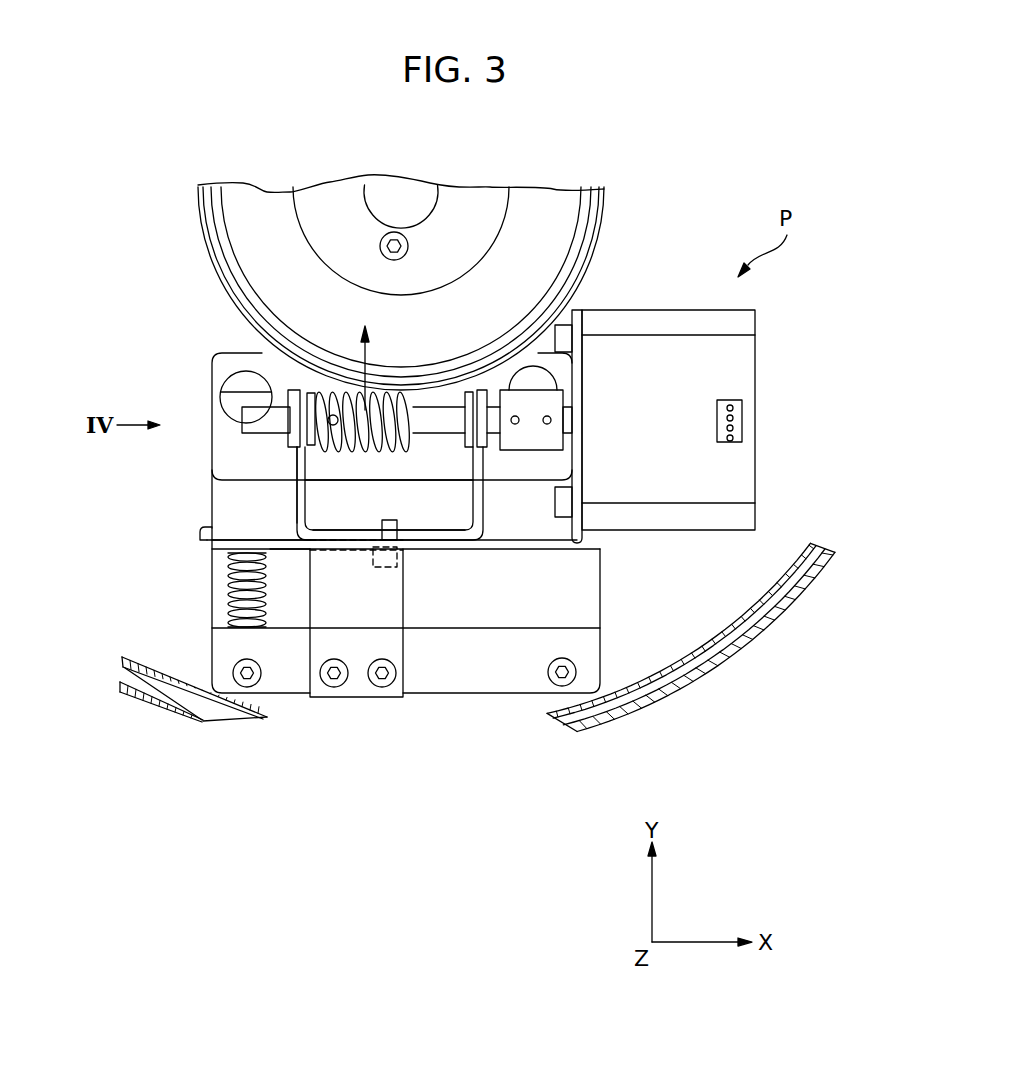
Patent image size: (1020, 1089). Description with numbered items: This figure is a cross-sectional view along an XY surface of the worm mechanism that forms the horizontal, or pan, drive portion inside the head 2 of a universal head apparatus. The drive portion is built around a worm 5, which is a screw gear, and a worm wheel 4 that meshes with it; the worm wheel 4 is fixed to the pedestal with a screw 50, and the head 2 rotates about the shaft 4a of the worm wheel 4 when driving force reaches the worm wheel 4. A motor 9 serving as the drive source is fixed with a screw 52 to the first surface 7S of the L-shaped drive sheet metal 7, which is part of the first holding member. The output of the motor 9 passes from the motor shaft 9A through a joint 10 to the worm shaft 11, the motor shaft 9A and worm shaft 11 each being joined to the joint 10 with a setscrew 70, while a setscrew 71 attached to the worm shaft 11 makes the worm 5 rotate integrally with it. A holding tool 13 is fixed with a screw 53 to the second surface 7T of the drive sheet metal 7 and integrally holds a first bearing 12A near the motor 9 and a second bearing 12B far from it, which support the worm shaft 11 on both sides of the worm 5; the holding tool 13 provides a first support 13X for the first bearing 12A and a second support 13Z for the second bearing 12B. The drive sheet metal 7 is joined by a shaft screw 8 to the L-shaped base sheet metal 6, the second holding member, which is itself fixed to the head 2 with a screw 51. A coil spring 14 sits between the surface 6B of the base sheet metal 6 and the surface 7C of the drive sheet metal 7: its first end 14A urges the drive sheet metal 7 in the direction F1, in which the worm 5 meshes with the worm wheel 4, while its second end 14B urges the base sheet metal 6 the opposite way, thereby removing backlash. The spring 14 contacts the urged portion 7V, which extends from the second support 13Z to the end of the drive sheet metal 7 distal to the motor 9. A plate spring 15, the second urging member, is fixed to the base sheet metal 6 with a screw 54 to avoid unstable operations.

The head 2 is at (678, 630).
The worm wheel 4 is at (560, 227).
The shaft 4a is at (410, 193).
The worm 5 is at (362, 352).
The base sheet metal 6 is at (468, 665).
The surface 6B is at (222, 627).
The drive sheet metal 7 is at (240, 538).
The surface 7C is at (222, 552).
The first surface 7S is at (578, 462).
The second surface 7T is at (283, 548).
The urged portion 7V is at (212, 530).
The shaft screw 8 is at (212, 397).
The motor 9 is at (724, 481).
The motor shaft 9A is at (572, 428).
The joint 10 is at (573, 443).
The worm shaft 11 is at (446, 418).
The first bearing 12A is at (483, 512).
The second bearing 12B is at (290, 441).
The holding tool 13 is at (450, 535).
The first support 13X is at (483, 470).
The second support 13Z is at (297, 490).
The spring 14 is at (228, 597).
The first end 14A is at (270, 556).
The second end 14B is at (267, 624).
The plate spring 15 is at (358, 692).
The screw 50 is at (380, 248).
The screw 51 is at (233, 668).
The screw 52 is at (566, 335).
The screw 53 is at (400, 563).
The screw 54 is at (340, 681).
The setscrew 70 is at (552, 420).
The setscrew 71 is at (287, 406).
The direction F1 is at (358, 352).